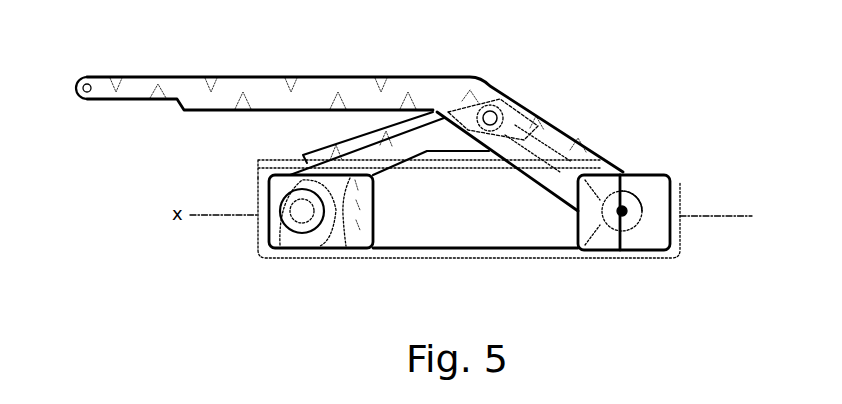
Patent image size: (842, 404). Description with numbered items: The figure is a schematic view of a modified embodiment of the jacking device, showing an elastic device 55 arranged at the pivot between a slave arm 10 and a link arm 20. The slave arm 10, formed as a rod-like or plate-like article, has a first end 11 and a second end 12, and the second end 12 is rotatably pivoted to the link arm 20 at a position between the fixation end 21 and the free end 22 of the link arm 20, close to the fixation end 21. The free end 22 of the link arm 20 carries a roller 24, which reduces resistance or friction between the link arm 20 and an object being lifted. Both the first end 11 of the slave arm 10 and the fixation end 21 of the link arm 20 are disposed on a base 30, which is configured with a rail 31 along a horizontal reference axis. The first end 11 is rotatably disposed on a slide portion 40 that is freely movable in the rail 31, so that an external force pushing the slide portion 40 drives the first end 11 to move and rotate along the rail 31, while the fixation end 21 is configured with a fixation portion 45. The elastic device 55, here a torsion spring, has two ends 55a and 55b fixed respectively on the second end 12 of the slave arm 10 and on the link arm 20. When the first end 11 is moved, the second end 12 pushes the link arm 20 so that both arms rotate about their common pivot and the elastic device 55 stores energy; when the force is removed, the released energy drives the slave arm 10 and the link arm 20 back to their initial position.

The slave arm 10 is at (465, 127).
The first end 11 is at (280, 252).
The second end 12 is at (526, 122).
The link arm 20 is at (343, 137).
The fixation end 21 is at (640, 192).
The free end 22 is at (143, 77).
The roller 24 is at (87, 101).
The base 30 is at (540, 262).
The rail 31 is at (412, 250).
The slide portion 40 is at (345, 250).
The fixation portion 45 is at (650, 233).
The elastic device 55 is at (493, 96).
The end of elastic device 55a is at (453, 153).
The end of elastic device 55b is at (566, 141).